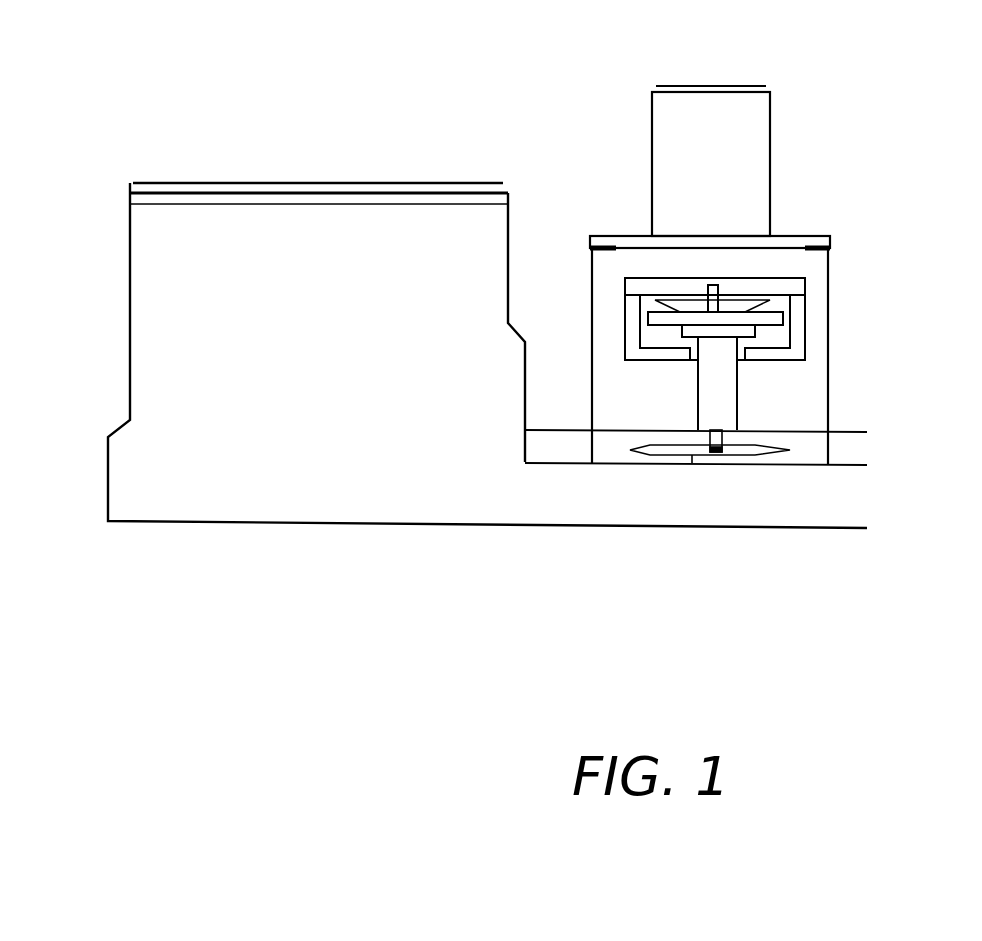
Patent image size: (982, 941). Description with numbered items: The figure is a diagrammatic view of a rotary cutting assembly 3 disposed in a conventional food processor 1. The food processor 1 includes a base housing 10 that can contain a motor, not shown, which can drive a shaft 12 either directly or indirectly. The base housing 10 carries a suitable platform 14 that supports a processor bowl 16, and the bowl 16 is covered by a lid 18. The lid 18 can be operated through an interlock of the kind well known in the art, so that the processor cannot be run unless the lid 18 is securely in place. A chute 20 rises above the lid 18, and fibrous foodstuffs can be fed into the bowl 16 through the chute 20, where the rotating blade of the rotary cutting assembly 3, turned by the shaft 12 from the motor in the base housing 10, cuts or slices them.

The food processor 1 is at (213, 93).
The base housing 10 is at (148, 352).
The platform 14 is at (553, 440).
The processor bowl 16 is at (830, 396).
The lid 18 is at (797, 243).
The chute 20 is at (757, 132).
The rotary cutting assembly 3 is at (672, 391).
The shaft 12 is at (722, 442).